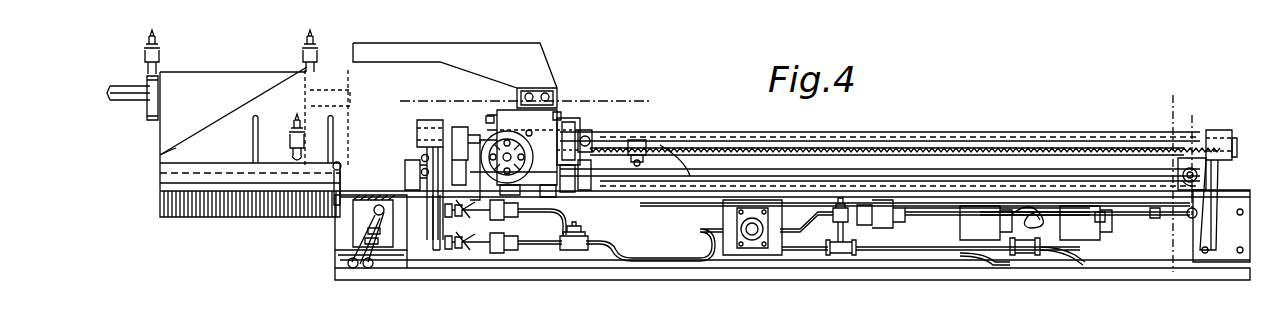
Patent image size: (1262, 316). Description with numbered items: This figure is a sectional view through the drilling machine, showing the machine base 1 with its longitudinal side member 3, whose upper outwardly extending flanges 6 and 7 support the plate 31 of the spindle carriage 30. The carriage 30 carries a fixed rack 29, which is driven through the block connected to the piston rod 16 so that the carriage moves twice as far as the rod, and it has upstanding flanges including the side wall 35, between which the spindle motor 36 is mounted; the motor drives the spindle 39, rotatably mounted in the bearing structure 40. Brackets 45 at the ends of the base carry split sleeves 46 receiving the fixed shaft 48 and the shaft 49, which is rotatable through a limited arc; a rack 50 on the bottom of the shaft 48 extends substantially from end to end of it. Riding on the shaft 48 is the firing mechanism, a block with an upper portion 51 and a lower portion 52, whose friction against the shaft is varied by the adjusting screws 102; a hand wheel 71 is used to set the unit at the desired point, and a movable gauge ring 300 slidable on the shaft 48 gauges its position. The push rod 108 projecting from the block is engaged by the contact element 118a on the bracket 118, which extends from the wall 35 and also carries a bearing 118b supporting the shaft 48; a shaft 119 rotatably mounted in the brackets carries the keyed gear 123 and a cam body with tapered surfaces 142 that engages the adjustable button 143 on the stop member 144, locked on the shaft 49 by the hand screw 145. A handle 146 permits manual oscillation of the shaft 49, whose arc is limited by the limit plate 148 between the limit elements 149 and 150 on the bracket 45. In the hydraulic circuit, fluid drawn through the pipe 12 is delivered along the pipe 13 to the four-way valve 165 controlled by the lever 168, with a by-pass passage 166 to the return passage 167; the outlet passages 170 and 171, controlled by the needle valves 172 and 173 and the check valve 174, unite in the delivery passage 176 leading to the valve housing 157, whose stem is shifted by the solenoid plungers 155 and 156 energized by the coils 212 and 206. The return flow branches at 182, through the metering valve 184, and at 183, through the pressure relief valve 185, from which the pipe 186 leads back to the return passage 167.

The machine base 1 is at (560, 270).
The longitudinal side member 3 is at (596, 272).
The upper outwardly extending flange 7 is at (832, 184).
The pipe 12 is at (1175, 272).
The pipe 13 is at (350, 258).
The piston rod 16 is at (1182, 207).
The rack 29 is at (172, 204).
The spindle carriage 30 is at (322, 66).
The plate 31 is at (160, 166).
The upstanding flange 35 is at (176, 148).
The spindle motor 36 is at (532, 56).
The spindle 39 is at (122, 86).
The bearing structure 40 is at (205, 76).
The bracket 45 is at (430, 240).
The split shaft receiving sleeve 46 is at (416, 126).
The shaft 48 is at (793, 134).
The shaft 49 is at (788, 162).
The rack 50 is at (744, 152).
The upper portion 51 is at (505, 112).
The lower portion 52 is at (549, 185).
The hand wheel 71 is at (520, 188).
The adjusting screws 102 is at (530, 126).
The push rod 108 is at (490, 118).
The bracket 118 is at (560, 122).
The contact element 118a is at (557, 114).
The bearing 118b is at (582, 125).
The shaft 119 is at (600, 157).
The gear 123 is at (574, 172).
The tapered surfaces 142 is at (586, 173).
The adjustable button 143 is at (1226, 166).
The stop member 144 is at (1182, 170).
The hand screw 145 is at (1180, 180).
The handle 146 is at (1186, 216).
The limit plate 148 is at (410, 183).
The adjustable limit element 149 is at (424, 170).
The adjustable limit element 150 is at (424, 155).
The solenoid plunger 155 is at (975, 223).
The solenoid plunger 156 is at (1100, 220).
The valve housing 157 is at (1010, 204).
The four-way valve 165 is at (356, 218).
The by-pass passage 166 is at (330, 270).
The return passage 167 is at (903, 252).
The valve handle lever 168 is at (325, 208).
The outlet passage 170 is at (534, 212).
The outlet passage 171 is at (526, 246).
The needle valve 172 is at (466, 214).
The needle valve 173 is at (508, 245).
The check valve 174 is at (488, 250).
The delivery passage 176 is at (616, 257).
The branch 182 is at (697, 243).
The branch 183 is at (926, 210).
The metering valve 184 is at (736, 212).
The pressure relief valve 185 is at (868, 224).
The pipe 186 is at (840, 250).
The coil 206 is at (1084, 240).
The coil 212 is at (956, 234).
The movable gauge ring 300 is at (458, 132).
The upper outwardly extending flange 6 is at (648, 92).